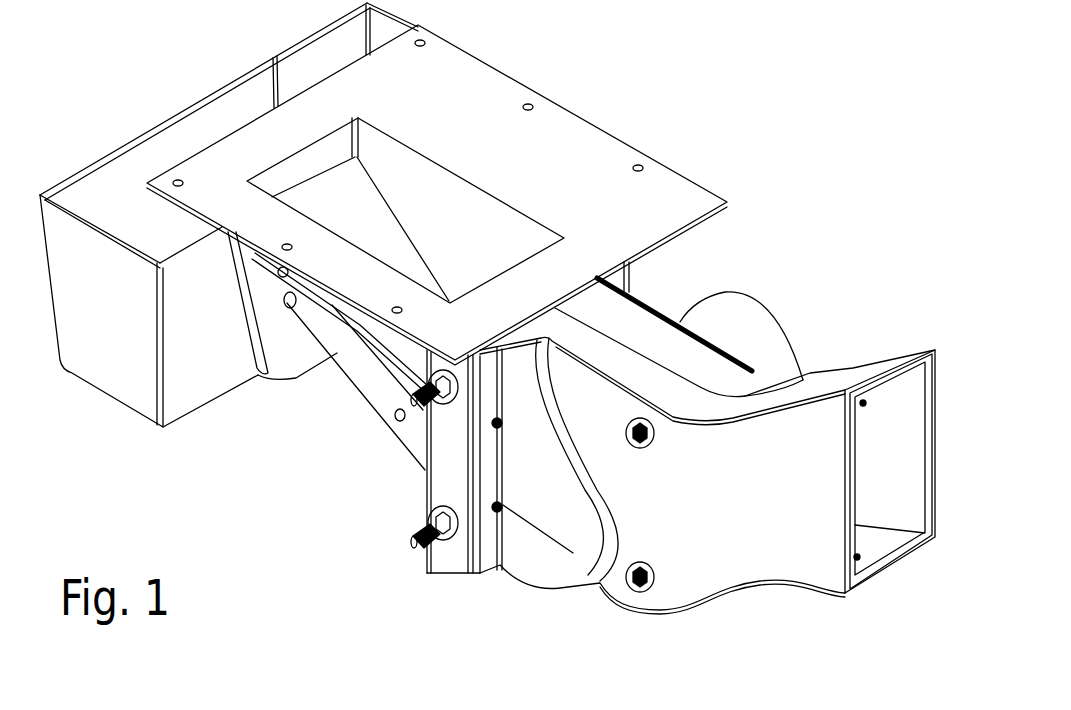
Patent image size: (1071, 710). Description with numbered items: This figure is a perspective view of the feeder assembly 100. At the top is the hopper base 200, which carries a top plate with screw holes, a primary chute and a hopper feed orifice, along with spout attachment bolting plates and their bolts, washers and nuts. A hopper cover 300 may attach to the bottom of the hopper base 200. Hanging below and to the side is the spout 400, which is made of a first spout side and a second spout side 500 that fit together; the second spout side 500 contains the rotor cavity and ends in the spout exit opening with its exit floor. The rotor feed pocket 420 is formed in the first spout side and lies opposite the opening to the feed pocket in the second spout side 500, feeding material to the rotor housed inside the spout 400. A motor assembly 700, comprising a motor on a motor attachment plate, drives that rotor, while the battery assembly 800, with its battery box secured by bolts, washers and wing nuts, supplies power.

The feeder assembly 100 is at (493, 87).
The hopper base 200 is at (577, 135).
The hopper cover 300 is at (375, 390).
The spout 400 is at (777, 567).
The rotor feed pocket 420 is at (597, 517).
The second spout side 500 is at (903, 353).
The motor assembly 700 is at (735, 303).
The battery assembly 800 is at (213, 123).